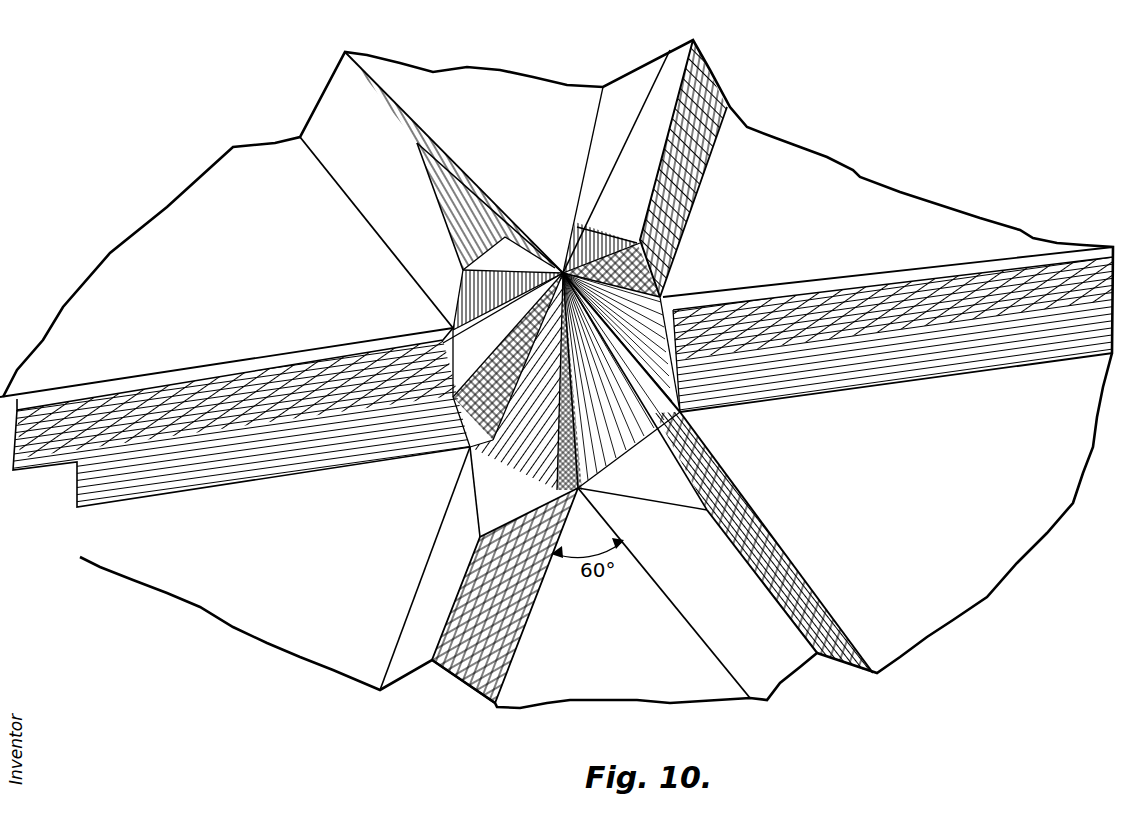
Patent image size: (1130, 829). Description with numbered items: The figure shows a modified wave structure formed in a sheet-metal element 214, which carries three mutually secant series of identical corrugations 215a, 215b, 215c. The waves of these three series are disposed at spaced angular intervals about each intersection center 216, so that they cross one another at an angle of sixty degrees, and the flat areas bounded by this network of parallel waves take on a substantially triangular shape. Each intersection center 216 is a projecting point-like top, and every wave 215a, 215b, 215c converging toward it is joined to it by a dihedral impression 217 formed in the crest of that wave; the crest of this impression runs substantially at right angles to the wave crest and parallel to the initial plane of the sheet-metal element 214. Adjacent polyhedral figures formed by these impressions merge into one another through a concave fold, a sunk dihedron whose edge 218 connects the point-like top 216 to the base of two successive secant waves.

The sheet-metal element 214 is at (290, 583).
The first series of corrugations 215a is at (505, 622).
The second series of corrugations 215b is at (715, 636).
The third series of corrugations 215c is at (900, 357).
The intersection center 216 is at (560, 262).
The dihedral impression 217 is at (492, 495).
The edge of sunk dihedron 218 is at (465, 455).